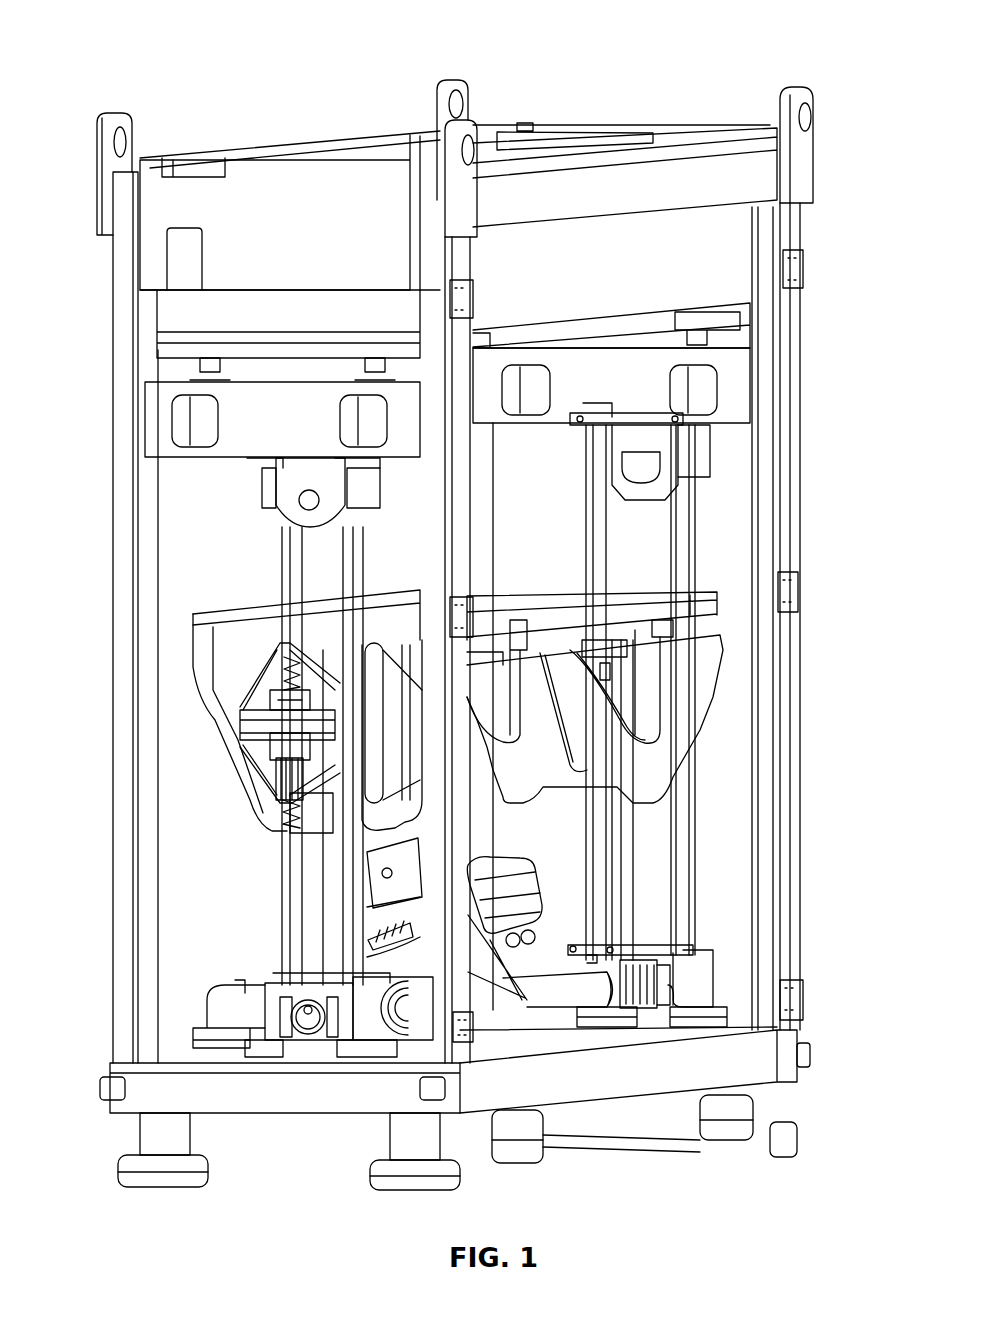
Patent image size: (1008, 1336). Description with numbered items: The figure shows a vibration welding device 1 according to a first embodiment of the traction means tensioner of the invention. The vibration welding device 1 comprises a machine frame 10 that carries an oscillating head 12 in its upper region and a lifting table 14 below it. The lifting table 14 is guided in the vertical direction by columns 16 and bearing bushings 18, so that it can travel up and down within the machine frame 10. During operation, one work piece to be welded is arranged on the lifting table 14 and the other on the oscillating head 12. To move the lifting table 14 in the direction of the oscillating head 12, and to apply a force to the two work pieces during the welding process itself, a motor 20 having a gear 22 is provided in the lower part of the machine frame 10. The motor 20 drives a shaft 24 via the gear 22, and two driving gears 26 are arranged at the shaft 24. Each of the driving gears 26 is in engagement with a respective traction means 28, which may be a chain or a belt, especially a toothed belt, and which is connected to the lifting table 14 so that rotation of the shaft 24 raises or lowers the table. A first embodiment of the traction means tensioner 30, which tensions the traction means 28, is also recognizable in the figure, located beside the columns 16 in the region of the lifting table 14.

The vibration welding device 1 is at (753, 88).
The machine frame 10 is at (792, 522).
The oscillating head 12 is at (290, 184).
The lifting table 14 is at (613, 597).
The columns 16 is at (598, 552).
The bearing bushings 18 is at (290, 621).
The motor 20 is at (520, 887).
The gear 22 is at (375, 918).
The shaft 24 is at (545, 998).
The driving gears 26 is at (306, 1018).
The traction means 28 is at (693, 787).
The traction means tensioner 30 is at (242, 732).